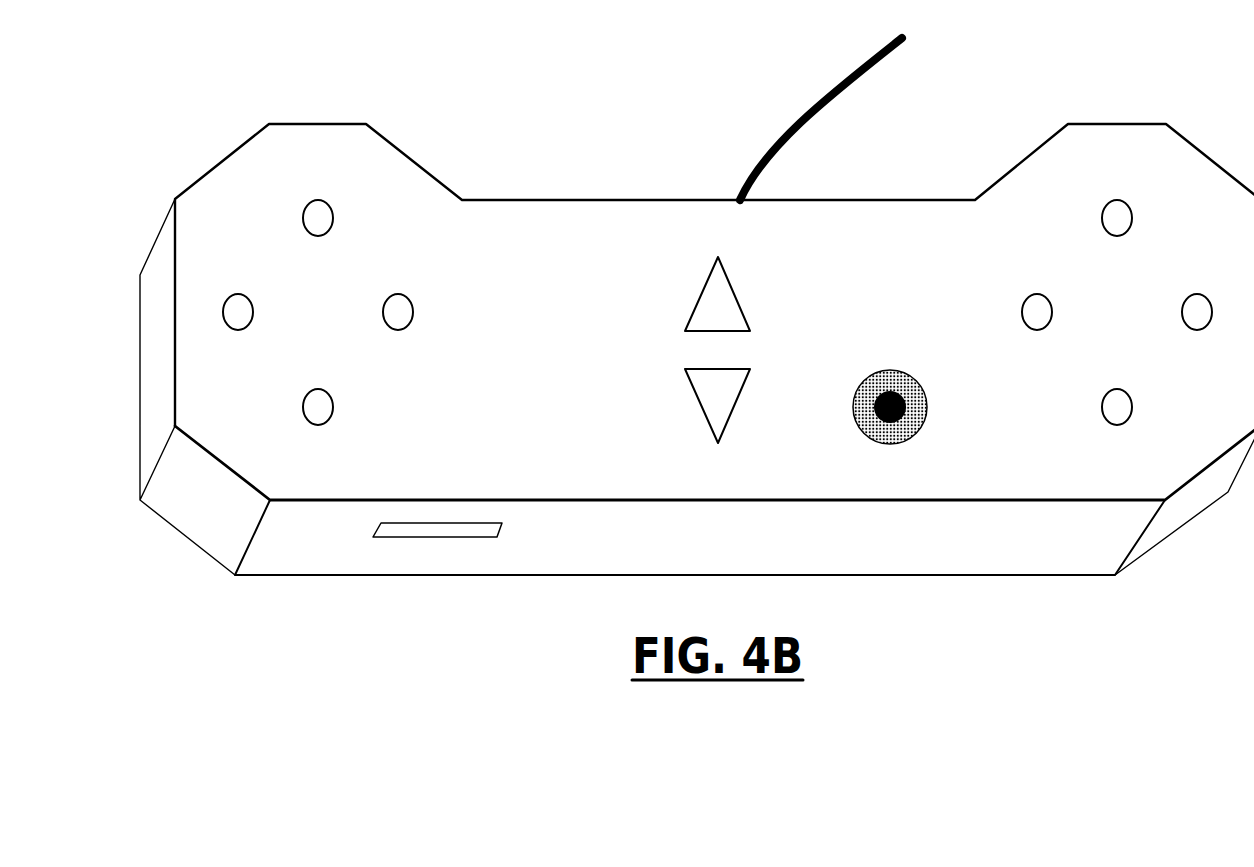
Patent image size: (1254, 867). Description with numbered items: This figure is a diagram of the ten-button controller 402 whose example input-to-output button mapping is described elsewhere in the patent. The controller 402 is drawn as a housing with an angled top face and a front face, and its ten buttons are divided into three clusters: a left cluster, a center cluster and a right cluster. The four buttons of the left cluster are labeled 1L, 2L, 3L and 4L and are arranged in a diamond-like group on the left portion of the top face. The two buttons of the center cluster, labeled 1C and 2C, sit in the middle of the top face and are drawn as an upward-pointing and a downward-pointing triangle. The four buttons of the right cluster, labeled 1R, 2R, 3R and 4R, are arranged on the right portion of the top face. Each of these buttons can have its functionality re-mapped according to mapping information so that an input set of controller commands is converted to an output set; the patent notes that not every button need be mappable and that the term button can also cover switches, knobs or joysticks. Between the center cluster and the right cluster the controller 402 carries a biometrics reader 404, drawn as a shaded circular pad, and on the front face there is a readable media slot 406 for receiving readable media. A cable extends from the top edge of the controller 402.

The ten-button controller 402 is at (561, 447).
The biometrics reader 404 is at (886, 370).
The readable media slot 406 is at (502, 530).
The left cluster button 1L is at (333, 222).
The left cluster button 2L is at (413, 310).
The left cluster button 3L is at (331, 414).
The left cluster button 4L is at (253, 312).
The right cluster button 1R is at (1102, 218).
The right cluster button 2R is at (1182, 310).
The right cluster button 3R is at (1102, 406).
The right cluster button 4R is at (1035, 330).
The center cluster button 1C is at (694, 302).
The center cluster button 2C is at (696, 402).